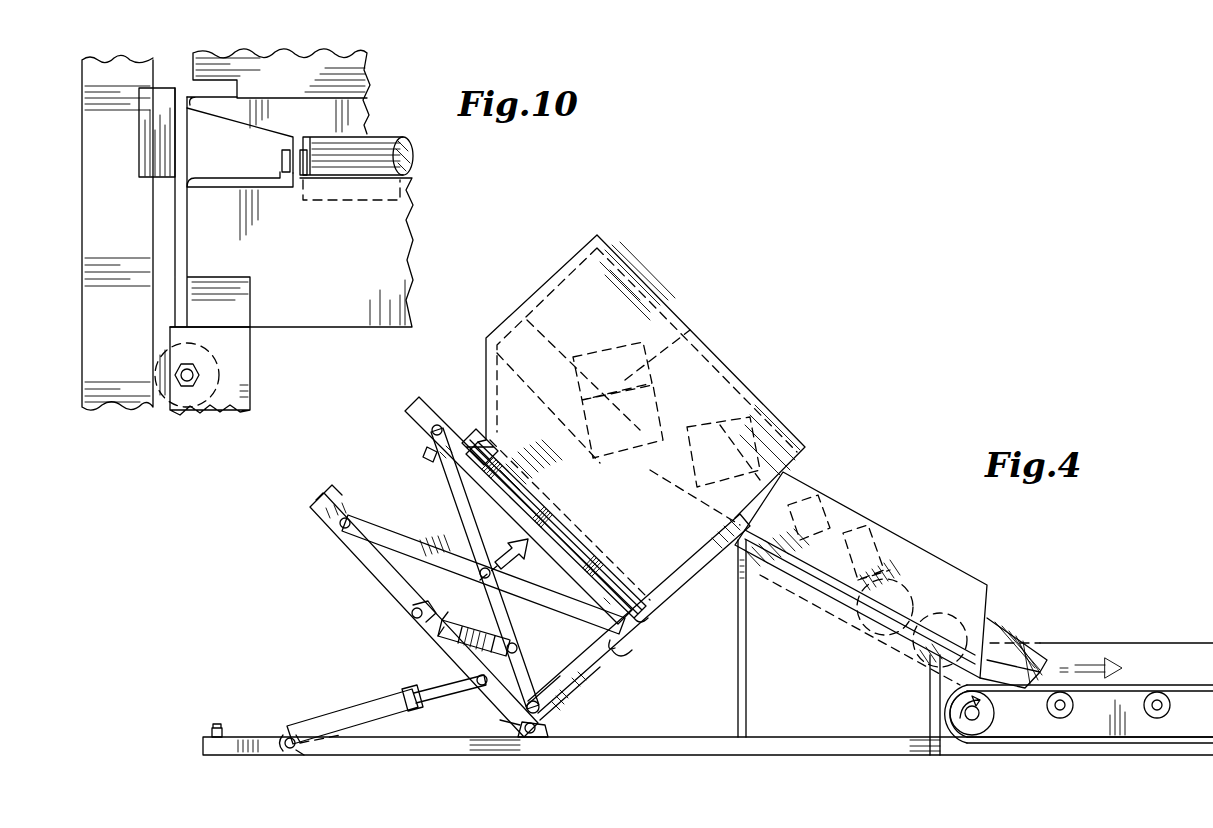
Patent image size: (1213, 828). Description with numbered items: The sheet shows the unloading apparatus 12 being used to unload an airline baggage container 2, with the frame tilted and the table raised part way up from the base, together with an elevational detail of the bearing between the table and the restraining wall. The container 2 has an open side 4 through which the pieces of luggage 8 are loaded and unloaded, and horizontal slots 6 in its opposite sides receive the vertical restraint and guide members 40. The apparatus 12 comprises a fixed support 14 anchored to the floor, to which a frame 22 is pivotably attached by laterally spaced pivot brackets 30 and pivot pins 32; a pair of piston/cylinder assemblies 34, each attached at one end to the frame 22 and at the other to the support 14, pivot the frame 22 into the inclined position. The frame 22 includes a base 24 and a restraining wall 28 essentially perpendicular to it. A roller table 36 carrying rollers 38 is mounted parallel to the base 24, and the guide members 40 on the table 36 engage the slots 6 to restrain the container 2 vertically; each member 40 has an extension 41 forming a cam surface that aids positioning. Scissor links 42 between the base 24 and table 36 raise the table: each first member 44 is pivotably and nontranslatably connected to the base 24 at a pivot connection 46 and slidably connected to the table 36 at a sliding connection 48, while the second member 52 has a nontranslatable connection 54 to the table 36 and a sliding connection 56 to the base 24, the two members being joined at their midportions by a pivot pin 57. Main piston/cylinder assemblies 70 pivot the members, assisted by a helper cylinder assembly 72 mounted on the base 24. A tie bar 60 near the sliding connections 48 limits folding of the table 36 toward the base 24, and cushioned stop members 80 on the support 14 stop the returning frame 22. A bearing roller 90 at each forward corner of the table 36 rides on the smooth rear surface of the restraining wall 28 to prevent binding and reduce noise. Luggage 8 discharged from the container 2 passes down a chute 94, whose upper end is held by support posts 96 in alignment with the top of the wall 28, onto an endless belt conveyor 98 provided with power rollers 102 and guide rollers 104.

In FIG. 10, the baggage container 2 is at (350, 66).
In FIG. 4, the baggage container 2 is at (620, 258).
In FIG. 4, the open side 4 is at (795, 470).
In FIG. 10, the horizontal slots 6 is at (235, 110).
In FIG. 4, the horizontal slots 6 is at (502, 452).
In FIG. 4, the pieces of luggage 8 is at (690, 332).
In FIG. 4, the unloading apparatus 12 is at (820, 378).
In FIG. 4, the fixed support 14 is at (250, 735).
In FIG. 4, the frame 22 is at (505, 725).
In FIG. 4, the base 24 is at (322, 550).
In FIG. 10, the restraining wall 28 is at (140, 251).
In FIG. 4, the restraining wall 28 is at (642, 623).
In FIG. 4, the pivot brackets 30 is at (560, 737).
In FIG. 4, the pivot pins 32 is at (535, 738).
In FIG. 4, the piston/cylinder assemblies 34 is at (392, 740).
In FIG. 10, the roller table 36 is at (310, 328).
In FIG. 4, the roller table 36 is at (428, 380).
In FIG. 10, the rollers 38 is at (385, 165).
In FIG. 10, the vertical restraint and guide members 40 is at (196, 185).
In FIG. 4, the vertical restraint and guide members 40 is at (470, 430).
In FIG. 10, the extension 41 is at (140, 137).
In FIG. 4, the scissor links 42 is at (380, 490).
In FIG. 4, the first member 44 is at (570, 680).
In FIG. 4, the pivot connection 46 is at (545, 705).
In FIG. 4, the sliding connection 48 is at (432, 431).
In FIG. 4, the second member 52 is at (385, 608).
In FIG. 4, the pivotable and nontranslatable connection 54 is at (628, 646).
In FIG. 4, the sliding connection 56 is at (340, 525).
In FIG. 4, the pivot pin 57 is at (483, 578).
In FIG. 4, the tie bar 60 is at (422, 453).
In FIG. 4, the main piston/cylinder assemblies 70 is at (428, 633).
In FIG. 4, the helper cylinder assembly 72 is at (452, 650).
In FIG. 4, the stop members 80 is at (217, 722).
In FIG. 10, the bearing roller 90 is at (168, 395).
In FIG. 4, the chute 94 is at (950, 570).
In FIG. 4, the support posts 96 is at (748, 660).
In FIG. 4, the endless belt conveyor 98 is at (1148, 683).
In FIG. 4, the power rollers 102 is at (950, 712).
In FIG. 4, the guide rollers 104 is at (1062, 683).